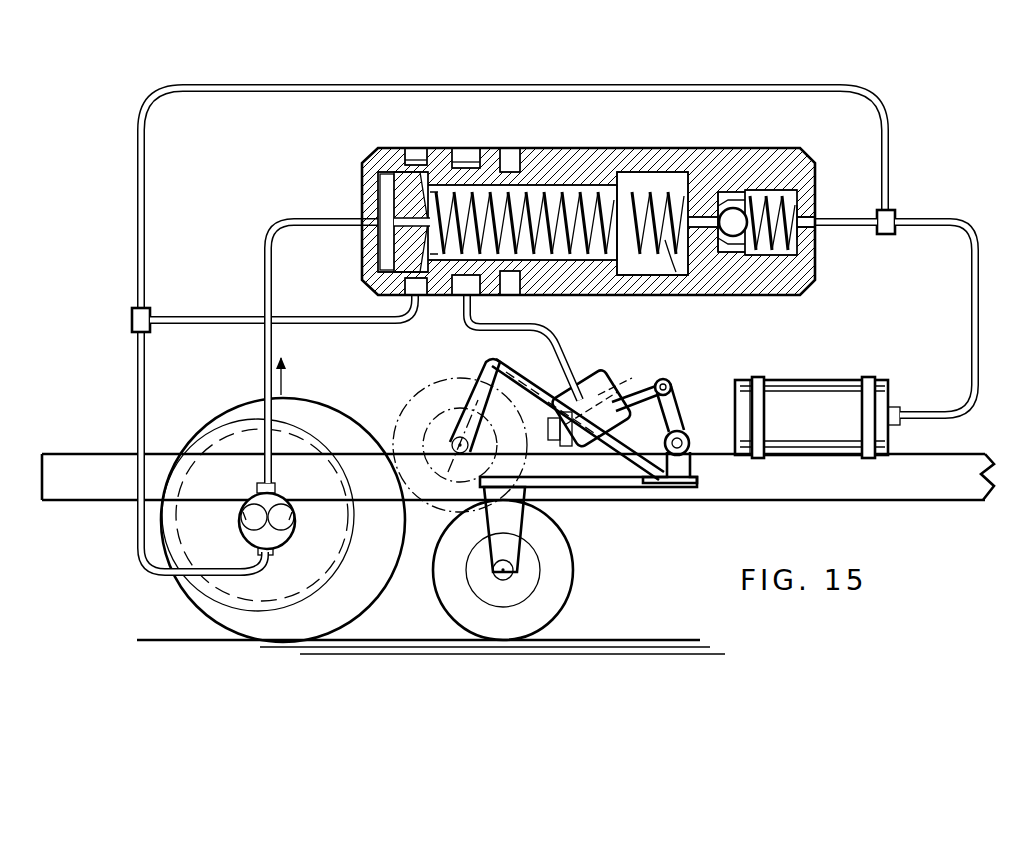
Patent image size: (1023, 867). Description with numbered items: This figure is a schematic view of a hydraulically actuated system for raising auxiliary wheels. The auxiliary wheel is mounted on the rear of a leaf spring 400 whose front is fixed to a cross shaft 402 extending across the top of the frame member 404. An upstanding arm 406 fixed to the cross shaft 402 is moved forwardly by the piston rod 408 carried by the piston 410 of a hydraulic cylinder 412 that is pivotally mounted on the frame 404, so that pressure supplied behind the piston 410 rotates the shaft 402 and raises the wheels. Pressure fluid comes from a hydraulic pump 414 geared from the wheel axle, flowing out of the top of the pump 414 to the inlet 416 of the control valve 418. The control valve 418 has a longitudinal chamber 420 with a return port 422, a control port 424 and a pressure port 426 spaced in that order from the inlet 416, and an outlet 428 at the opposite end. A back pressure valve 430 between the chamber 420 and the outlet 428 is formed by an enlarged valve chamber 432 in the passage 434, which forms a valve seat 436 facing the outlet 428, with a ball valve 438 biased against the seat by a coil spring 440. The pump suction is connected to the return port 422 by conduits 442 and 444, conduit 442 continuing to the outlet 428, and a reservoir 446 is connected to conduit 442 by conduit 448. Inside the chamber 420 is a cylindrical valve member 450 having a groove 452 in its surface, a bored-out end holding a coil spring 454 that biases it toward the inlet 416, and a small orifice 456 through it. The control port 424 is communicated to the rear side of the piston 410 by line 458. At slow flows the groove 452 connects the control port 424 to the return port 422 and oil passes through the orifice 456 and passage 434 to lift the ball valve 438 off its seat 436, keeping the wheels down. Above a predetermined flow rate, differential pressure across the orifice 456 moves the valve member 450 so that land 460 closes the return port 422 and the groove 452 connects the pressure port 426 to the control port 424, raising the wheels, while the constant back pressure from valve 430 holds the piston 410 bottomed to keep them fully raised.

The leaf spring 400 is at (612, 482).
The cross shaft 402 is at (689, 438).
The frame member 404 is at (832, 488).
The upstanding arm 406 is at (672, 384).
The piston rod 408 is at (648, 396).
The piston 410 is at (602, 392).
The hydraulic cylinder 412 is at (572, 392).
The hydraulic pump 414 is at (280, 540).
The inlet 416 is at (376, 214).
The control valve 418 is at (356, 163).
The chamber 420 is at (652, 172).
The return port 422 is at (416, 150).
The control port 424 is at (470, 136).
The pressure port 426 is at (508, 150).
The outlet 428 is at (818, 220).
The back pressure valve 430 is at (745, 212).
The enlarged valve chamber 432 is at (812, 160).
The passage 434 is at (736, 238).
The valve seat 436 is at (735, 205).
The ball valve 438 is at (780, 236).
The coil spring 440 is at (796, 232).
The conduit 442 is at (139, 372).
The conduit 444 is at (218, 322).
The reservoir 446 is at (898, 348).
The conduit 448 is at (972, 278).
The cylindrical valve member 450 is at (562, 182).
The groove 452 is at (450, 280).
The coil spring 454 is at (598, 262).
The orifice 456 is at (395, 230).
The line 458 is at (548, 346).
The land 460 is at (404, 286).